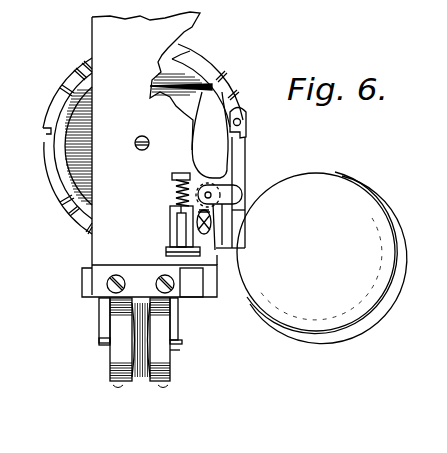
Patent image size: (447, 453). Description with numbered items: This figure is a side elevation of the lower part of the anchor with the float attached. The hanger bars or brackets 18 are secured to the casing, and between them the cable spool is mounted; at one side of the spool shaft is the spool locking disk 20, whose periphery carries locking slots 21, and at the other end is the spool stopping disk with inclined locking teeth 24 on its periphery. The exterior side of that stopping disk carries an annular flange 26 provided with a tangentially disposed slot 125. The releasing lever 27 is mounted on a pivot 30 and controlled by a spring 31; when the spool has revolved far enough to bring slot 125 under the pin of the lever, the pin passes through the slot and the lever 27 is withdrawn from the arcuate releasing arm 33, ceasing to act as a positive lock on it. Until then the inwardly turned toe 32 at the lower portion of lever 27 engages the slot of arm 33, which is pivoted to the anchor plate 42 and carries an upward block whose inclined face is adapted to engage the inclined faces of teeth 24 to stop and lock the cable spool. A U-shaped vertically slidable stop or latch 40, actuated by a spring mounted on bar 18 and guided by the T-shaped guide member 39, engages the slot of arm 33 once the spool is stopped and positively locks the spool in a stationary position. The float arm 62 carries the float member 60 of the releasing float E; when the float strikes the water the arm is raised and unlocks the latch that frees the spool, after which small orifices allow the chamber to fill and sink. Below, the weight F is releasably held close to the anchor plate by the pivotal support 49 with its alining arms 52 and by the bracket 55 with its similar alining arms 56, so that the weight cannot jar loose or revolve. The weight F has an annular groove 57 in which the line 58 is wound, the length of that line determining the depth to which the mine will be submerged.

The hanger bar 18 is at (103, 30).
The spool locking disk 20 is at (187, 53).
The locking slots 21 is at (44, 138).
The locking teeth 24 is at (70, 85).
The annular flange 26 is at (172, 62).
The tangential slot 125 is at (215, 87).
The releasing lever 27 is at (246, 152).
The pivot 30 is at (211, 195).
The spring 31 is at (212, 222).
The U-shaped stop or latch 40 is at (170, 218).
The guide member 39 is at (172, 250).
The arcuate releasing arm 33 is at (170, 258).
The anchor plate 42 is at (82, 278).
The float arm 62 is at (216, 256).
The bracket 55 is at (105, 315).
The alining arms 56 is at (99, 342).
The line 58 is at (160, 358).
The annular groove 57 is at (140, 383).
The toe 32 is at (176, 323).
The pivotal support 49 is at (180, 336).
The alining arms 52 is at (178, 354).
The float member 60 is at (376, 304).
The releasing float E is at (321, 221).
The weight F is at (163, 384).